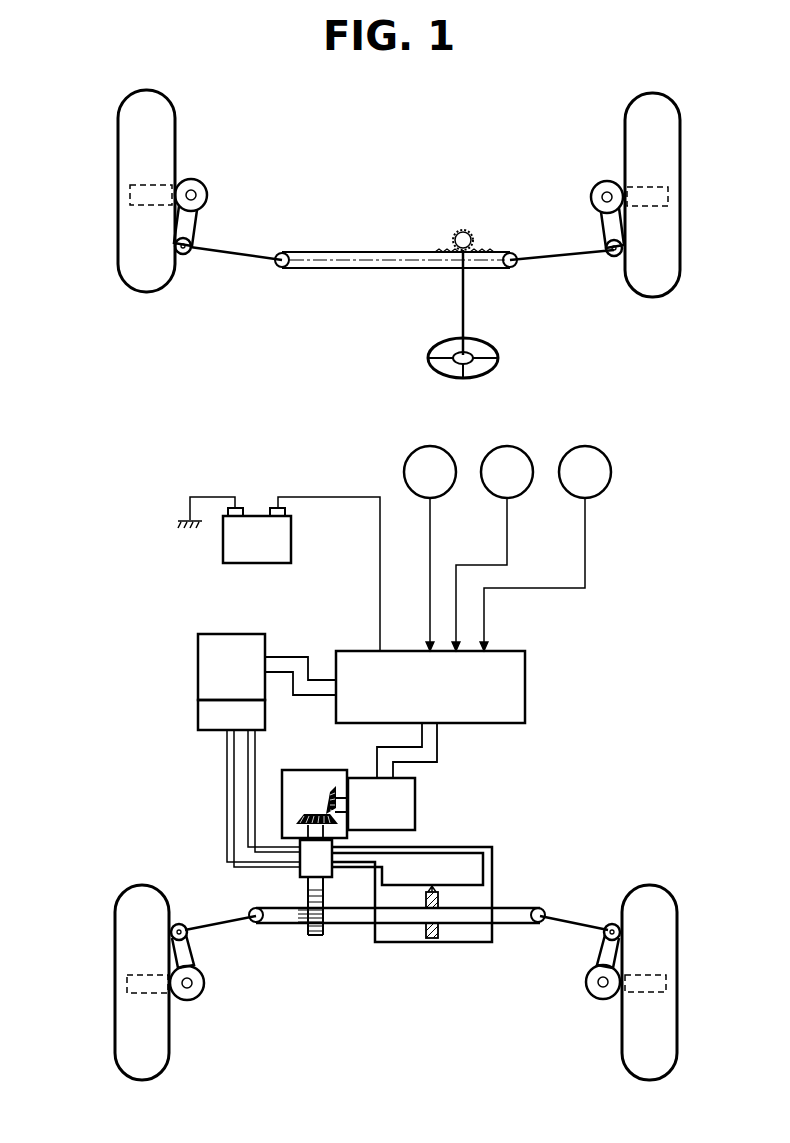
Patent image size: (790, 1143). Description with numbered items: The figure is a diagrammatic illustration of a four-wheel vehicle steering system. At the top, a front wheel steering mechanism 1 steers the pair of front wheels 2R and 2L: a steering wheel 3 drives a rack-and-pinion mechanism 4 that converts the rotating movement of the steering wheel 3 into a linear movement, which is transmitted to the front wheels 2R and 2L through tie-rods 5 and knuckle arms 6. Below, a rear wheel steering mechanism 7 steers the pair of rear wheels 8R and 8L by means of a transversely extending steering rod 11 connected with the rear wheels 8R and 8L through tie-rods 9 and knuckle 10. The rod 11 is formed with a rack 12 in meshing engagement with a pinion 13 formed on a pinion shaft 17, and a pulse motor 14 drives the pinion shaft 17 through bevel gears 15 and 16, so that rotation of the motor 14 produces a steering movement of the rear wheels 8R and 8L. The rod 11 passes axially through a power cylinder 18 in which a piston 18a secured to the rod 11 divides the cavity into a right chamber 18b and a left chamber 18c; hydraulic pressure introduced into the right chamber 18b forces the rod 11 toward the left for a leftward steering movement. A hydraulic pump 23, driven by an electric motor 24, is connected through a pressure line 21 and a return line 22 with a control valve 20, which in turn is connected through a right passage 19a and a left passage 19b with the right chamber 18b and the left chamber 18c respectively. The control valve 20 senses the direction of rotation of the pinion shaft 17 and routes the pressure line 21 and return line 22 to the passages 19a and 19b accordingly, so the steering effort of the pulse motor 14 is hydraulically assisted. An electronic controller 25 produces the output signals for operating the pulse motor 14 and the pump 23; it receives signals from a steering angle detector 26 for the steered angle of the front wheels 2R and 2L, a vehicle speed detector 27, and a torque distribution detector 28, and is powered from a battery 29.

The front wheel steering mechanism 1 is at (368, 286).
The front wheel 2L is at (118, 138).
The front wheel 2R is at (680, 134).
The steering wheel 3 is at (492, 342).
The rack-and-pinion mechanism 4 is at (475, 238).
The tie-rods 5 is at (222, 262).
The knuckle arms 6 is at (200, 216).
The rear wheel steering mechanism 7 is at (516, 787).
The rear wheel 8L is at (116, 936).
The rear wheel 8R is at (680, 938).
The tie-rods 9 is at (218, 923).
The knuckle 10 is at (202, 958).
The steering rod 11 is at (348, 926).
The rack 12 is at (298, 916).
The pinion 13 is at (312, 932).
The pulse motor 14 is at (414, 800).
The bevel gear 15 is at (328, 790).
The bevel gear 16 is at (302, 820).
The pinion shaft 17 is at (300, 888).
The power cylinder 18 is at (429, 941).
The piston 18a is at (438, 934).
The right chamber 18b is at (486, 938).
The left chamber 18c is at (396, 936).
The right passage 19a is at (454, 846).
The left passage 19b is at (384, 867).
The control valve 20 is at (330, 874).
The pressure line 21 is at (227, 800).
The return line 22 is at (255, 745).
The hydraulic pump 23 is at (198, 720).
The electric motor 24 is at (198, 664).
The electronic controller 25 is at (525, 667).
The steering angle detector 26 is at (426, 446).
The vehicle speed detector 27 is at (506, 446).
The torque distribution detector 28 is at (586, 446).
The battery 29 is at (260, 565).